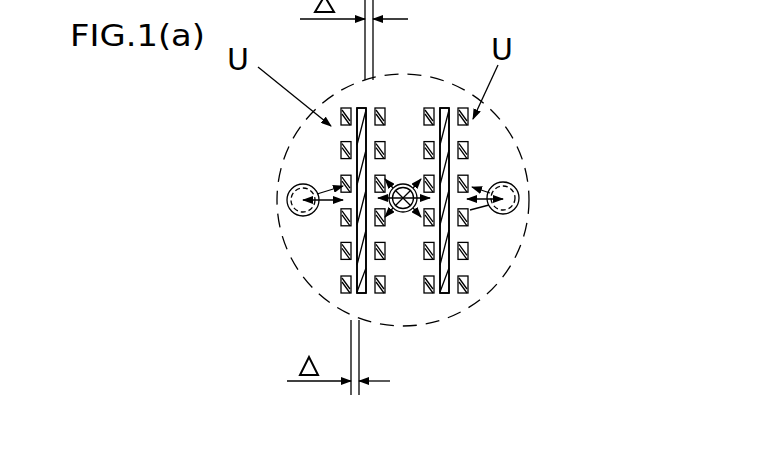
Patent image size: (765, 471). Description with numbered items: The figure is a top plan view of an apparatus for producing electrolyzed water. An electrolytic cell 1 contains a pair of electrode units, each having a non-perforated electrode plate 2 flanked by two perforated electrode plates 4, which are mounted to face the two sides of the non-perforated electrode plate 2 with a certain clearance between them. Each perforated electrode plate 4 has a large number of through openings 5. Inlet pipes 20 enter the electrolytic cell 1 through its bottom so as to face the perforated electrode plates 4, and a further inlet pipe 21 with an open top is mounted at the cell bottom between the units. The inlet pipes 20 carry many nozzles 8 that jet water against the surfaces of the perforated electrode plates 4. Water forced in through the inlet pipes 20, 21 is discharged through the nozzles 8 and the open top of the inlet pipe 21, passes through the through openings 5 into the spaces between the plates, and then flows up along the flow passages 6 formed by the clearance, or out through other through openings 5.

The electrolytic cell 1 is at (511, 126).
The non-perforated electrode plate 2 is at (360, 294).
The perforated electrode plate 4 is at (341, 289).
The through openings 5 is at (357, 236).
The flow passages 6 is at (357, 163).
The nozzles 8 is at (491, 206).
The inlet pipes 20 is at (289, 191).
The inlet pipe 21 is at (405, 184).